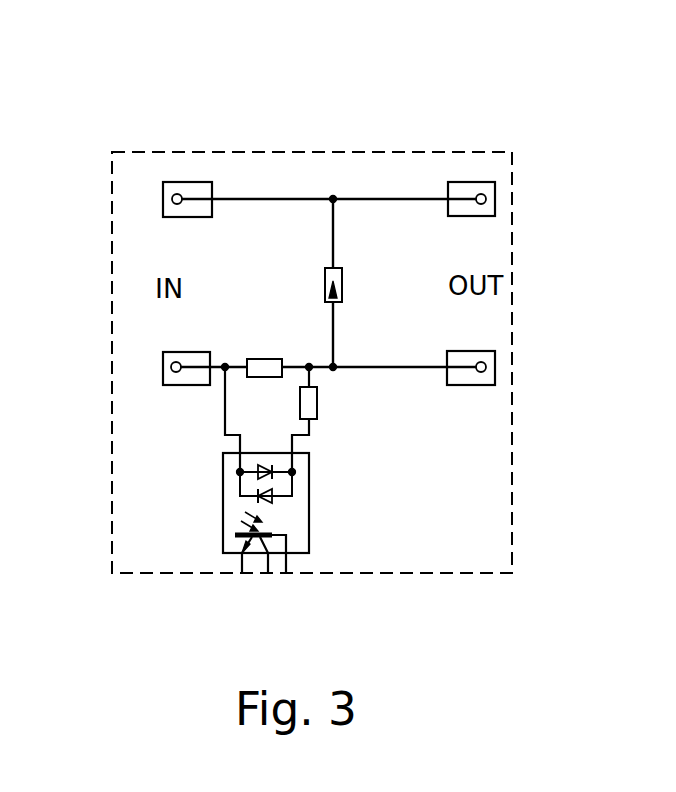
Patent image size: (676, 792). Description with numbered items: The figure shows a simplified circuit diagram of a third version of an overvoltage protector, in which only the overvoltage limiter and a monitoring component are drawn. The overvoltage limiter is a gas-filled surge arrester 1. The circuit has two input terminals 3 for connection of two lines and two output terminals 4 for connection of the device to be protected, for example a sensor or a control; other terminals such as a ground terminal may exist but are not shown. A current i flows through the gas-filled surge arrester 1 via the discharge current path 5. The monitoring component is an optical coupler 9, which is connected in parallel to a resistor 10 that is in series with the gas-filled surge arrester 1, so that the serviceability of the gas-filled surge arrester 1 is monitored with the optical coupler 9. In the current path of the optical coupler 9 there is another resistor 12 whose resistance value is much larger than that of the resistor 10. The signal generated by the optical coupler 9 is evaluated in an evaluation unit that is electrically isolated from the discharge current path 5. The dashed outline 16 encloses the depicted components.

The gas-filled surge arrester 1 is at (325, 272).
The input terminals 3 is at (177, 193).
The output terminals 4 is at (483, 195).
The discharge current path 5 is at (276, 176).
The optical coupler 9 is at (190, 523).
The resistor 10 is at (268, 368).
The resistor 12 is at (310, 406).
The housing 16 is at (415, 152).